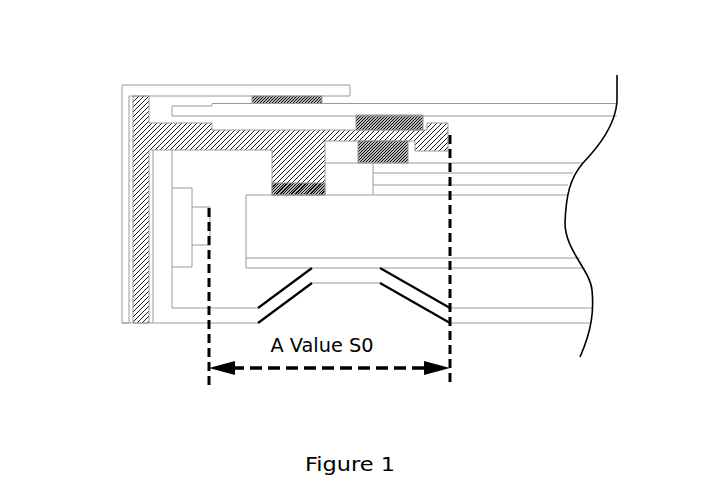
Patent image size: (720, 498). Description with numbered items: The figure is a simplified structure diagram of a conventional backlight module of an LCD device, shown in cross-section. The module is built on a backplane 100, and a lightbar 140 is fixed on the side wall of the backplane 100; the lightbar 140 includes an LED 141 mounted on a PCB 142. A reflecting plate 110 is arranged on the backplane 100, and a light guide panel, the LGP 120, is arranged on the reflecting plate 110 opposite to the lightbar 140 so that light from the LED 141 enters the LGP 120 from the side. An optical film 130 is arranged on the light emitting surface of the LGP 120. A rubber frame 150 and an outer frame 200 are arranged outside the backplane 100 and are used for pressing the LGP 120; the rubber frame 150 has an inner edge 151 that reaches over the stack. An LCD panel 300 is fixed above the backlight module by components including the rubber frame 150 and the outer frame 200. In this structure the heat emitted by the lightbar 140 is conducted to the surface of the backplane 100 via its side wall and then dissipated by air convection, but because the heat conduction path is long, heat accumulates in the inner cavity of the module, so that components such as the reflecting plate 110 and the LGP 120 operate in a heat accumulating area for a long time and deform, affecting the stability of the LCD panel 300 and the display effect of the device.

The backplane 100 is at (160, 300).
The reflecting plate 110 is at (505, 265).
The LGP 120 is at (488, 228).
The optical film 130 is at (468, 170).
The lightbar 140 is at (70, 167).
The LED 141 is at (198, 216).
The PCB 142 is at (182, 238).
The rubber frame 150 is at (140, 113).
The inner edge 151 is at (450, 135).
The outer frame 200 is at (128, 108).
The LCD panel 300 is at (233, 110).